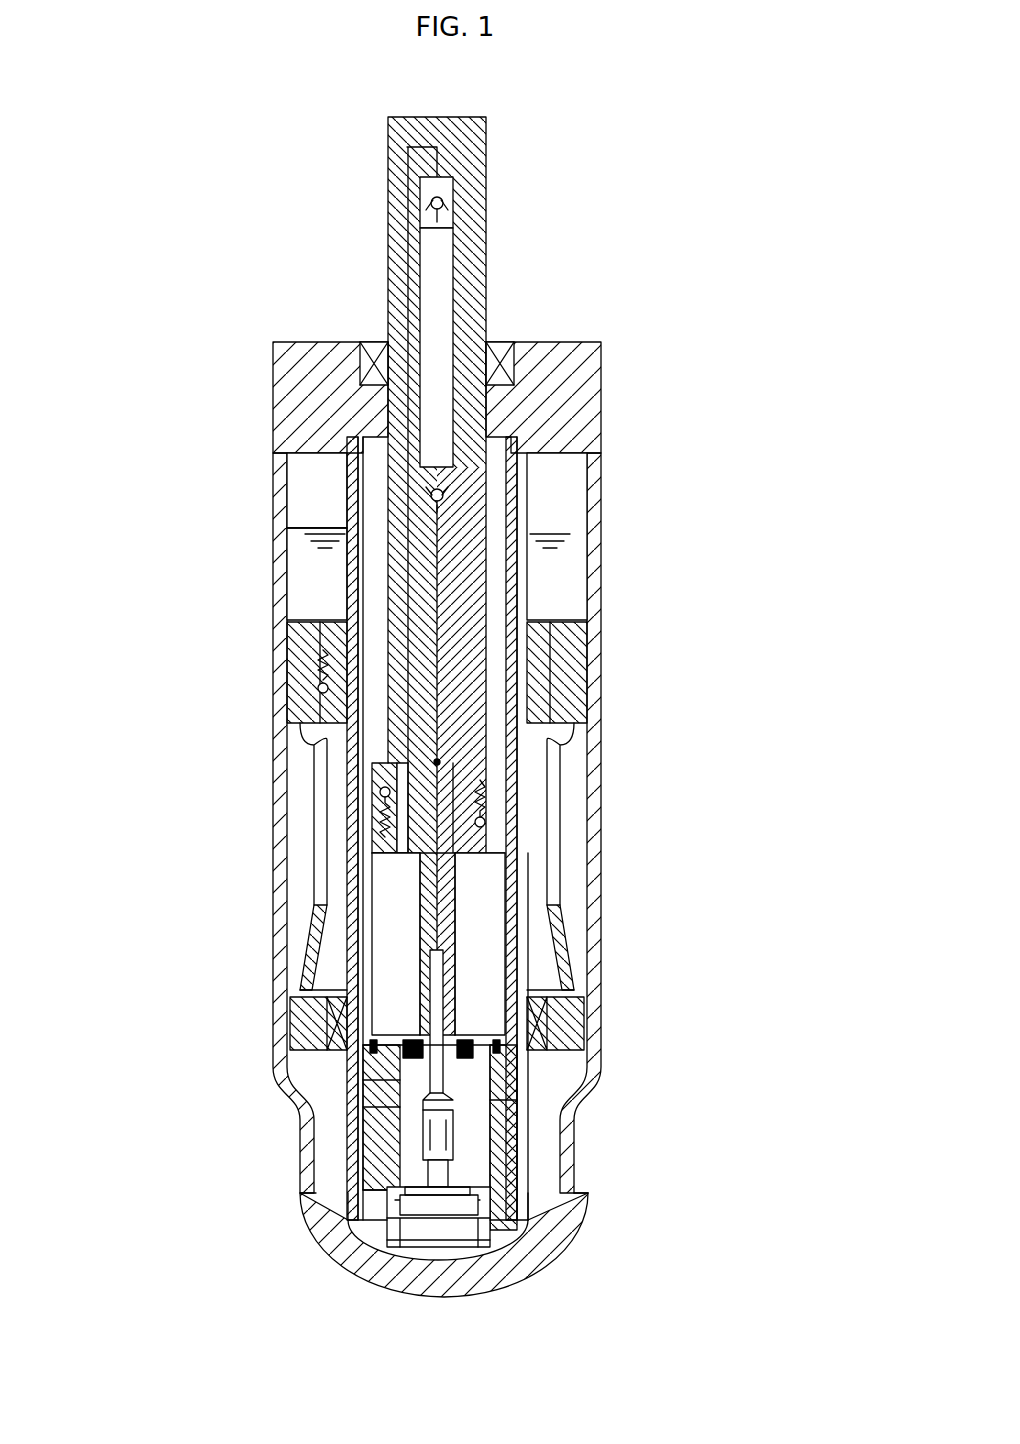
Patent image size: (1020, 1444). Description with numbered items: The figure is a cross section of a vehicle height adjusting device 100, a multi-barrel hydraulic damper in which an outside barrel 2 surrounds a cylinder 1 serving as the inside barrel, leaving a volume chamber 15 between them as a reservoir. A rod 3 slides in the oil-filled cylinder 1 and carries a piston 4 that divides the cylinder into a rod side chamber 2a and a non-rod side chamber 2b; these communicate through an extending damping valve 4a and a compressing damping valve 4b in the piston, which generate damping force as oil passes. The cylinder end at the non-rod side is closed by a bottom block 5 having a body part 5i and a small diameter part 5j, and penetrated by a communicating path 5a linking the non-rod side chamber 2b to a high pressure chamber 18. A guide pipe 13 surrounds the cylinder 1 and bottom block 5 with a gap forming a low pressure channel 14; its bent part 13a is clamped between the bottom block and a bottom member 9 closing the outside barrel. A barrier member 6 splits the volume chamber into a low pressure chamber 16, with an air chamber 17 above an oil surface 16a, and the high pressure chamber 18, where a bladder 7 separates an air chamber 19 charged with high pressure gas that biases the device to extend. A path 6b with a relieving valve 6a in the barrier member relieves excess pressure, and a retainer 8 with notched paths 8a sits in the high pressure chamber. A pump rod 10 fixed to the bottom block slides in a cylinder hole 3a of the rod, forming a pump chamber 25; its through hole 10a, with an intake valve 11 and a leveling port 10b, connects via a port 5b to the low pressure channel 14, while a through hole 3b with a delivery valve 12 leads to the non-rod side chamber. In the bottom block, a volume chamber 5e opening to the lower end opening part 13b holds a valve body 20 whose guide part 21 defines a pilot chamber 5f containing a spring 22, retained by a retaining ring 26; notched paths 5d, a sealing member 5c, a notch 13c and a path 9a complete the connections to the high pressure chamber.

The vehicle height adjusting device 100 is at (568, 155).
The cylinder 1 is at (525, 512).
The outside barrel 2 is at (600, 440).
The rod side chamber 2a is at (495, 560).
The non-rod side chamber 2b is at (381, 962).
The rod 3 is at (487, 262).
The cylinder hole 3a is at (455, 330).
The through hole 3b is at (407, 262).
The piston 4 is at (500, 865).
The extending damping valve 4a is at (380, 788).
The compressing damping valve 4b is at (486, 820).
The bottom block 5 is at (545, 1125).
The communicating path 5a is at (505, 1100).
The port 5b is at (360, 1080).
The sealing member 5c is at (357, 1107).
The notched paths 5d is at (582, 1235).
The volume chamber 5e is at (350, 1203).
The pilot chamber 5f is at (520, 1135).
The body part 5i is at (497, 1156).
The small diameter part 5j is at (520, 1062).
The barrier member 6 is at (570, 648).
The relieving valve 6a is at (316, 688).
The path 6b is at (305, 648).
The bladder 7 is at (300, 810).
The retainer 8 is at (315, 987).
The notched paths 8a is at (470, 1052).
The bottom member 9 is at (323, 1247).
The path 9a is at (527, 1247).
The pump rod 10 is at (446, 968).
The through hole 10a is at (458, 910).
The leveling port 10b is at (441, 760).
The intake valve 11 is at (443, 493).
The delivery valve 12 is at (444, 206).
The guide pipe 13 is at (578, 690).
The bent part 13a is at (490, 1247).
The lower end opening part 13b is at (463, 1235).
The notch 13c is at (543, 1260).
The low pressure channel 14 is at (300, 625).
The volume chamber 15 is at (281, 1008).
The low pressure chamber 16 is at (311, 592).
The oil surface 16a is at (320, 532).
The air chamber 17 is at (311, 509).
The high pressure chamber 18 is at (316, 1157).
The air chamber 19 is at (289, 896).
The valve body 20 is at (413, 1223).
The guide part 21 is at (427, 1217).
The spring 22 is at (370, 1160).
The pump chamber 25 is at (438, 298).
The retaining ring 26 is at (370, 1257).